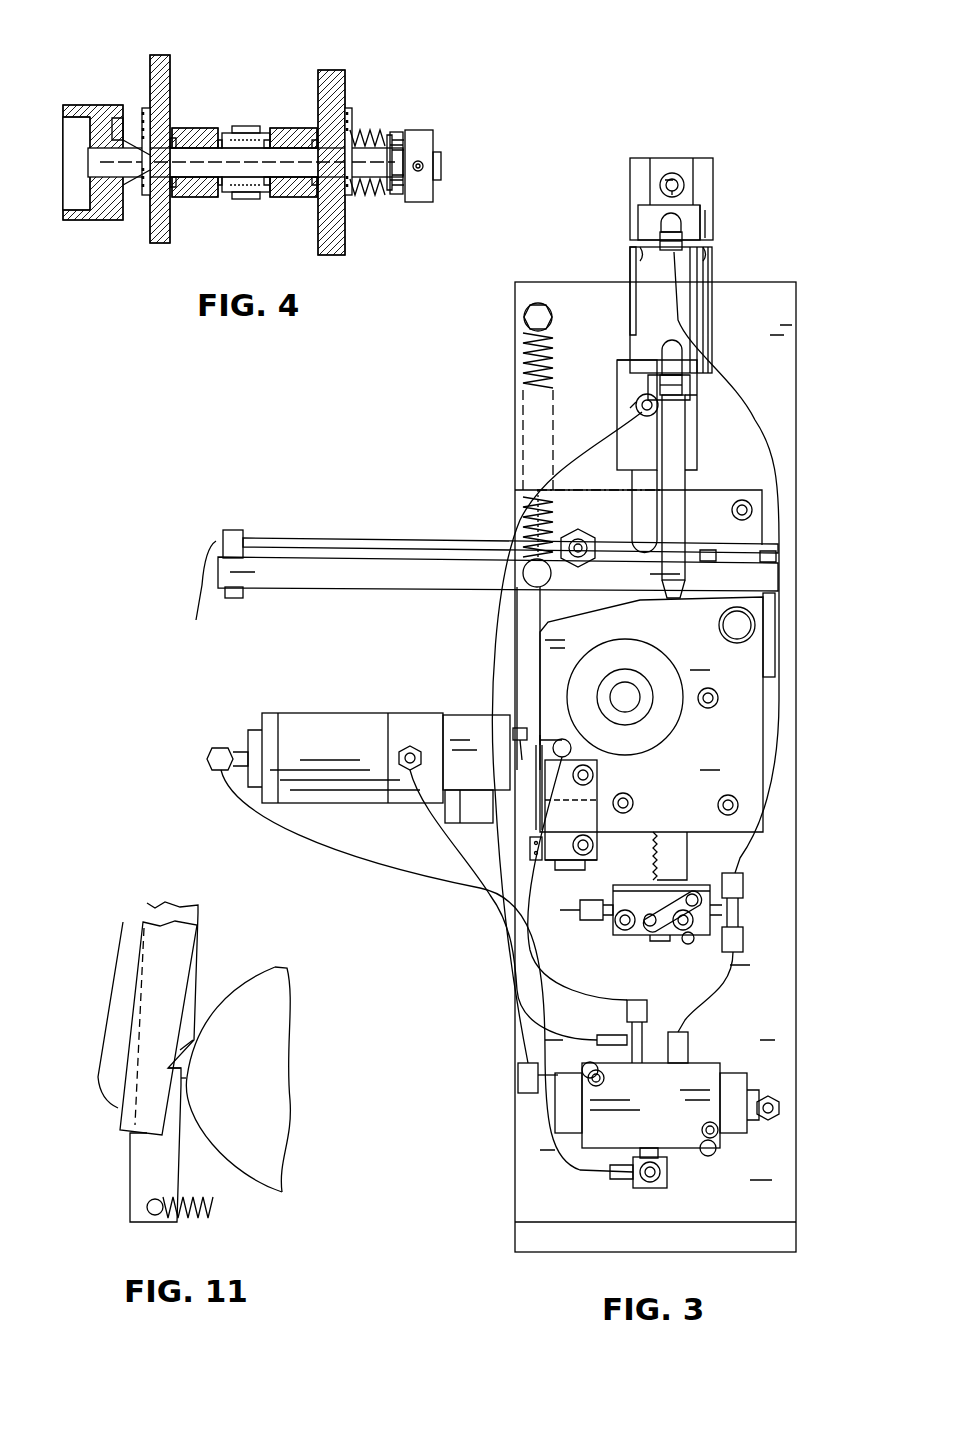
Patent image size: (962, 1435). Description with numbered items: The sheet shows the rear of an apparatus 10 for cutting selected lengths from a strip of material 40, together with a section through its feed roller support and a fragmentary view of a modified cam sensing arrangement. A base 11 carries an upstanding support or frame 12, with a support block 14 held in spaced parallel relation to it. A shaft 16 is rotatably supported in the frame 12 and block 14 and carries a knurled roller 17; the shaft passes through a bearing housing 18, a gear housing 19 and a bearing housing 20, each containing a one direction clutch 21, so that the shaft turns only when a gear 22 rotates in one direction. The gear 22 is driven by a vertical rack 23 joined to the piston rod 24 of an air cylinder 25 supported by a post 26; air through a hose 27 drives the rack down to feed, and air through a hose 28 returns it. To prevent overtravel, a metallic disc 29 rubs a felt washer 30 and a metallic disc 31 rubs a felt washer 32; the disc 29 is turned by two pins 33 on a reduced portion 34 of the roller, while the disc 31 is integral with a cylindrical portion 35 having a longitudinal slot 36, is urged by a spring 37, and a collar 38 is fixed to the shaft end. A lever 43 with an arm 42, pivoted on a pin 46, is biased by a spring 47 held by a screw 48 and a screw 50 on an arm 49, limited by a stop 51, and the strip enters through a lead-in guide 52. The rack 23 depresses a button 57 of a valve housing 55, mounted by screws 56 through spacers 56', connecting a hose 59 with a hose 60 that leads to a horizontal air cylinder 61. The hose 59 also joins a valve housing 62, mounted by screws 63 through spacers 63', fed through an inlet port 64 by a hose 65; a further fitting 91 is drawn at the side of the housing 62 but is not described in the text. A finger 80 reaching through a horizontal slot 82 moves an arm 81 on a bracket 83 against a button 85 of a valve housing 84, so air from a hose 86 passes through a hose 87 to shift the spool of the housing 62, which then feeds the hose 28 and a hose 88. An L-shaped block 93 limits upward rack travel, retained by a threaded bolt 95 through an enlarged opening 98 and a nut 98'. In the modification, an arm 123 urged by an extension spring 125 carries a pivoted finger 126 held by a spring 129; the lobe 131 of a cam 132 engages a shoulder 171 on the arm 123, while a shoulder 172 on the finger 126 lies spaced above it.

In FIG. 3, the apparatus 10 is at (813, 876).
In FIG. 3, the base 11 is at (513, 1240).
In FIG. 4, the support or frame 12 is at (152, 58).
In FIG. 3, the support or frame 12 is at (795, 800).
In FIG. 4, the support block 14 is at (312, 52).
In FIG. 3, the support block 14 is at (738, 746).
In FIG. 4, the shaft 16 is at (300, 171).
In FIG. 3, the shaft 16 is at (632, 705).
In FIG. 4, the knurled roller 17 is at (80, 222).
In FIG. 4, the bearing housing 18 is at (200, 128).
In FIG. 4, the gear housing 19 is at (236, 133).
In FIG. 4, the bearing housing 20 is at (305, 128).
In FIG. 4, the one direction clutch 21 is at (182, 128).
In FIG. 4, the gear 22 is at (248, 199).
In FIG. 3, the rack 23 is at (688, 870).
In FIG. 3, the piston rod 24 is at (688, 435).
In FIG. 3, the air cylinder 25 is at (716, 258).
In FIG. 3, the post 26 is at (716, 196).
In FIG. 3, the hose 27 is at (780, 452).
In FIG. 3, the hose 28 is at (560, 1042).
In FIG. 4, the metallic disc 29 is at (145, 108).
In FIG. 4, the felt washer 30 is at (148, 108).
In FIG. 4, the metallic disc 31 is at (352, 112).
In FIG. 3, the metallic disc 31 is at (672, 688).
In FIG. 4, the felt washer 32 is at (350, 108).
In FIG. 4, the pins 33 is at (120, 232).
In FIG. 4, the reduced portion 34 is at (130, 148).
In FIG. 4, the cylindrical portion 35 is at (382, 197).
In FIG. 4, the longitudinal slot 36 is at (390, 160).
In FIG. 4, the spring 37 is at (395, 132).
In FIG. 4, the collar 38 is at (425, 130).
In FIG. 3, the collar 38 is at (627, 712).
In FIG. 3, the strip of material 40 is at (400, 542).
In FIG. 3, the arm 42 is at (777, 642).
In FIG. 3, the lever 43 is at (340, 555).
In FIG. 3, the pin 46 is at (730, 632).
In FIG. 3, the spring 47 is at (525, 376).
In FIG. 3, the screw 48 is at (528, 316).
In FIG. 3, the arm 49 is at (415, 590).
In FIG. 3, the screw 50 is at (530, 582).
In FIG. 3, the stop 51 is at (583, 538).
In FIG. 3, the lead-in guide 52 is at (232, 530).
In FIG. 3, the valve housing 55 is at (674, 947).
In FIG. 3, the screws 56 is at (682, 917).
In FIG. 3, the spacers 56' is at (654, 934).
In FIG. 3, the button 57 is at (687, 893).
In FIG. 3, the hose 59 is at (708, 990).
In FIG. 3, the hose 60 is at (576, 900).
In FIG. 3, the air cylinder 61 is at (320, 713).
In FIG. 3, the valve housing 62 is at (692, 1150).
In FIG. 3, the screws 63 is at (653, 1104).
In FIG. 3, the spacers 63' is at (657, 1051).
In FIG. 3, the inlet port 64 is at (640, 1158).
In FIG. 3, the hose 65 is at (662, 1176).
In FIG. 3, the finger 80 is at (515, 728).
In FIG. 3, the arm 81 is at (540, 830).
In FIG. 3, the horizontal slot 82 is at (555, 740).
In FIG. 3, the bracket 83 is at (530, 850).
In FIG. 3, the valve housing 84 is at (604, 853).
In FIG. 3, the button 85 is at (550, 808).
In FIG. 3, the hose 86 is at (552, 1172).
In FIG. 3, the hose 87 is at (522, 1045).
In FIG. 3, the hose 88 is at (620, 988).
In FIG. 3, the nut 91 is at (780, 1110).
In FIG. 3, the L-shaped block 93 is at (697, 458).
In FIG. 3, the threaded bolt 95 is at (640, 425).
In FIG. 3, the enlarged opening 98 is at (637, 384).
In FIG. 3, the nut 98' is at (621, 407).
In FIG. 11, the arm 123 is at (130, 1185).
In FIG. 11, the extension spring 125 is at (208, 1218).
In FIG. 11, the finger 126 is at (133, 1008).
In FIG. 11, the spring 129 is at (106, 1102).
In FIG. 11, the lobe 131 is at (184, 1080).
In FIG. 11, the cam 132 is at (272, 967).
In FIG. 11, the shoulder 171 is at (184, 1072).
In FIG. 11, the shoulder 172 is at (184, 1060).